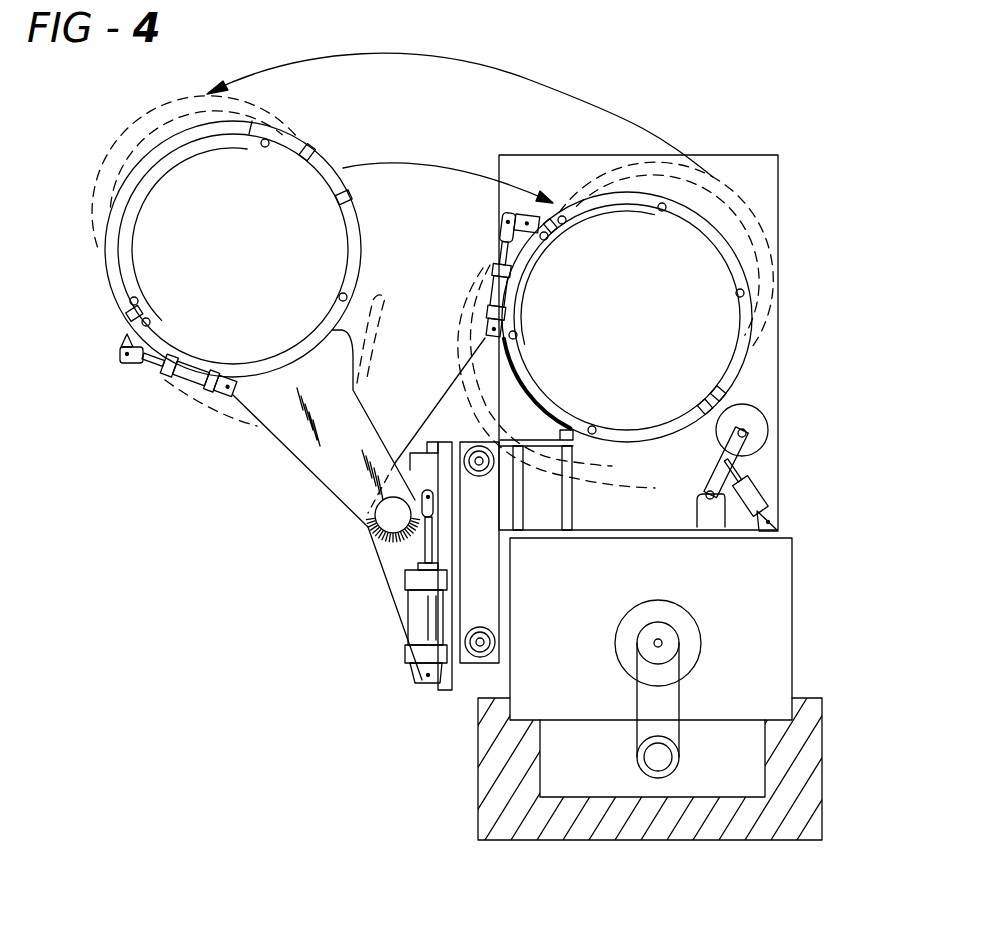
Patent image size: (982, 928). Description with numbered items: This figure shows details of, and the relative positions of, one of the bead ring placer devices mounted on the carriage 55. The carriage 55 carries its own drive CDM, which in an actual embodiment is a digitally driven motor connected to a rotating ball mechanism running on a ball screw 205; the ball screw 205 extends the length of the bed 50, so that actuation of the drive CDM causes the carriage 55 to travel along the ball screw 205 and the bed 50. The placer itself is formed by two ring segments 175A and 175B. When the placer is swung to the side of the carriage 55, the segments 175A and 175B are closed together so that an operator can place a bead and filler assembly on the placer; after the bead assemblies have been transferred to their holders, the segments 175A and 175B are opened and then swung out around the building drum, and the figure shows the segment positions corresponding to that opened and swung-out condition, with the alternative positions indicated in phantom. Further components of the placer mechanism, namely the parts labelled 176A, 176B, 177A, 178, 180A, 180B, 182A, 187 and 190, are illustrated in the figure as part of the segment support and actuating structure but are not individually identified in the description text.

The segment 175A is at (103, 240).
The segment 175B is at (255, 372).
The support arm 176A is at (325, 475).
The support arm 176B is at (440, 421).
The arm bracket 177A is at (393, 598).
The pivot bearing 178 is at (482, 465).
The clamp cylinder 180A is at (184, 380).
The clamp cylinder 180B is at (493, 298).
The actuating cylinder 182A is at (420, 623).
The ring guide block 187 is at (303, 158).
The ring hole 190 is at (340, 295).
The ball screw 205 is at (630, 758).
The bed 50 is at (810, 742).
The carriage 55 is at (656, 588).
The drive CDM is at (703, 638).